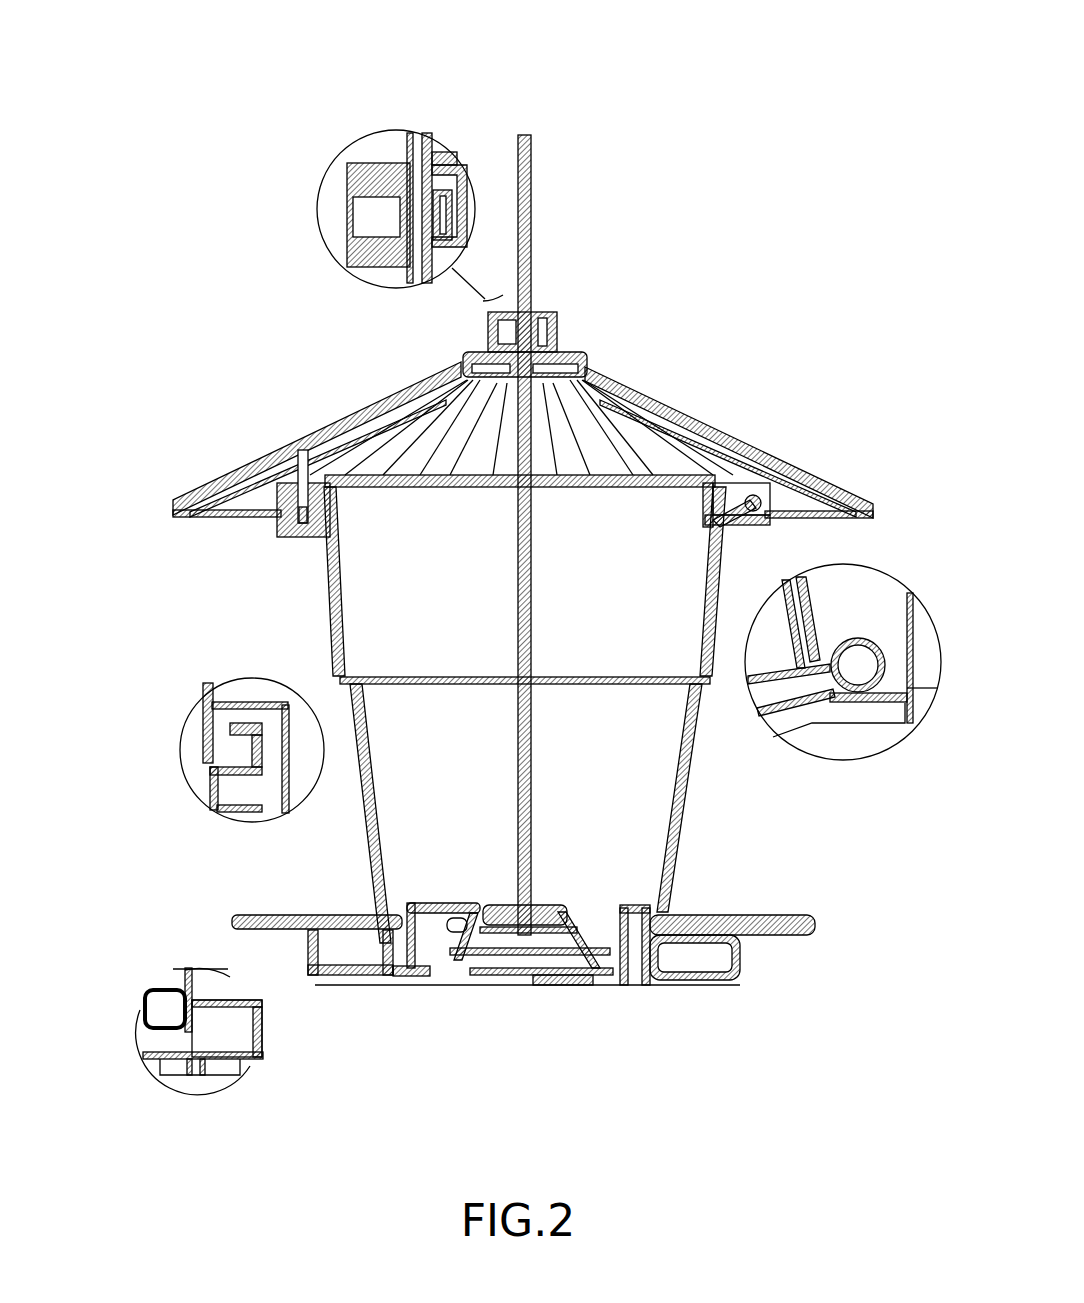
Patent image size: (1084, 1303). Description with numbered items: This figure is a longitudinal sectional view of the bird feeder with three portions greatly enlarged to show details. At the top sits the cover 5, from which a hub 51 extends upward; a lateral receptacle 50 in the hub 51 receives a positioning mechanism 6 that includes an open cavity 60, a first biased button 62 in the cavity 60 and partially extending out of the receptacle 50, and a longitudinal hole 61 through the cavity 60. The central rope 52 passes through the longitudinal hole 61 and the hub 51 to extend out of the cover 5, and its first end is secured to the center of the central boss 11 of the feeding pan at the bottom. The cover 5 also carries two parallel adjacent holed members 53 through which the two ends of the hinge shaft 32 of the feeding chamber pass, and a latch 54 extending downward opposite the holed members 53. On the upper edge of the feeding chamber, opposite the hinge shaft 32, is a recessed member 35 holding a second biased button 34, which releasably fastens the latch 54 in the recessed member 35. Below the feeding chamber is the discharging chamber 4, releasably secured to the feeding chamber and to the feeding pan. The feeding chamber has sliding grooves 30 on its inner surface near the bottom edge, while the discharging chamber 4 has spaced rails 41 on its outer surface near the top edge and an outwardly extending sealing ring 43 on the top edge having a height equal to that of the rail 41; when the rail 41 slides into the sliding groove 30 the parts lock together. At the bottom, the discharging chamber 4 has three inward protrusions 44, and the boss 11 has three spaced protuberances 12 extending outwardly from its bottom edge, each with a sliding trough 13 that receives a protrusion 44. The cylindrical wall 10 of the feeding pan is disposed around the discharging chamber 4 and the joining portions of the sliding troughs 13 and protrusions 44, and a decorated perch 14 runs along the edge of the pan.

The discharging chamber 4 is at (375, 838).
The cover 5 is at (400, 428).
The positioning mechanism 6 is at (465, 167).
The cylindrical wall 10 is at (683, 981).
The central boss 11 is at (600, 990).
The protuberance 12 is at (405, 975).
The sliding trough 13 is at (228, 1034).
The decorated perch 14 is at (303, 945).
The sliding groove 30 is at (222, 758).
The hinge shaft 32 is at (855, 667).
The second biased button 34 is at (278, 519).
The recessed member 35 is at (300, 535).
The rail 41 is at (236, 778).
The sealing ring 43 is at (236, 706).
The protrusion 44 is at (203, 1043).
The lateral receptacle 50 is at (470, 219).
The hub 51 is at (398, 217).
The central rope 52 is at (474, 241).
The holed members 53 is at (868, 608).
The latch 54 is at (290, 465).
The open cavity 60 is at (463, 200).
The longitudinal hole 61 is at (407, 264).
The first biased button 62 is at (382, 217).